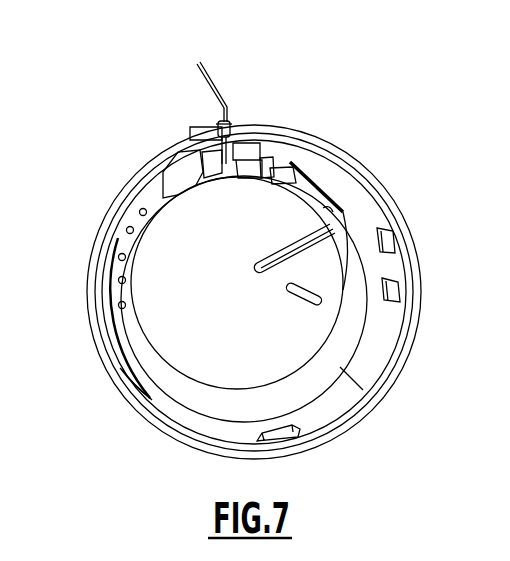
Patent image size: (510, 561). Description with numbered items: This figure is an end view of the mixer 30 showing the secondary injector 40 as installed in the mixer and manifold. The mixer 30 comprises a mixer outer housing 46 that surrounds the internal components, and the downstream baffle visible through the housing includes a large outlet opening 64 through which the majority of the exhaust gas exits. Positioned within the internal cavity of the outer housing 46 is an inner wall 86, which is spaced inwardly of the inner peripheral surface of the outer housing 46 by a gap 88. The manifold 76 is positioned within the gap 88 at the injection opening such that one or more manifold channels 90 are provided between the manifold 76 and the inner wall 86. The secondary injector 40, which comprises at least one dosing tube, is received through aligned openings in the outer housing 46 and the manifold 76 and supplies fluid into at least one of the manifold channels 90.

The mixer 30 is at (385, 103).
The secondary injector 40 is at (231, 100).
The mixer outer housing 46 is at (105, 370).
The large outlet opening 64 is at (258, 270).
The manifold 76 is at (258, 153).
The inner wall 86 is at (140, 233).
The gap 88 is at (118, 256).
The manifold channels 90 is at (177, 172).